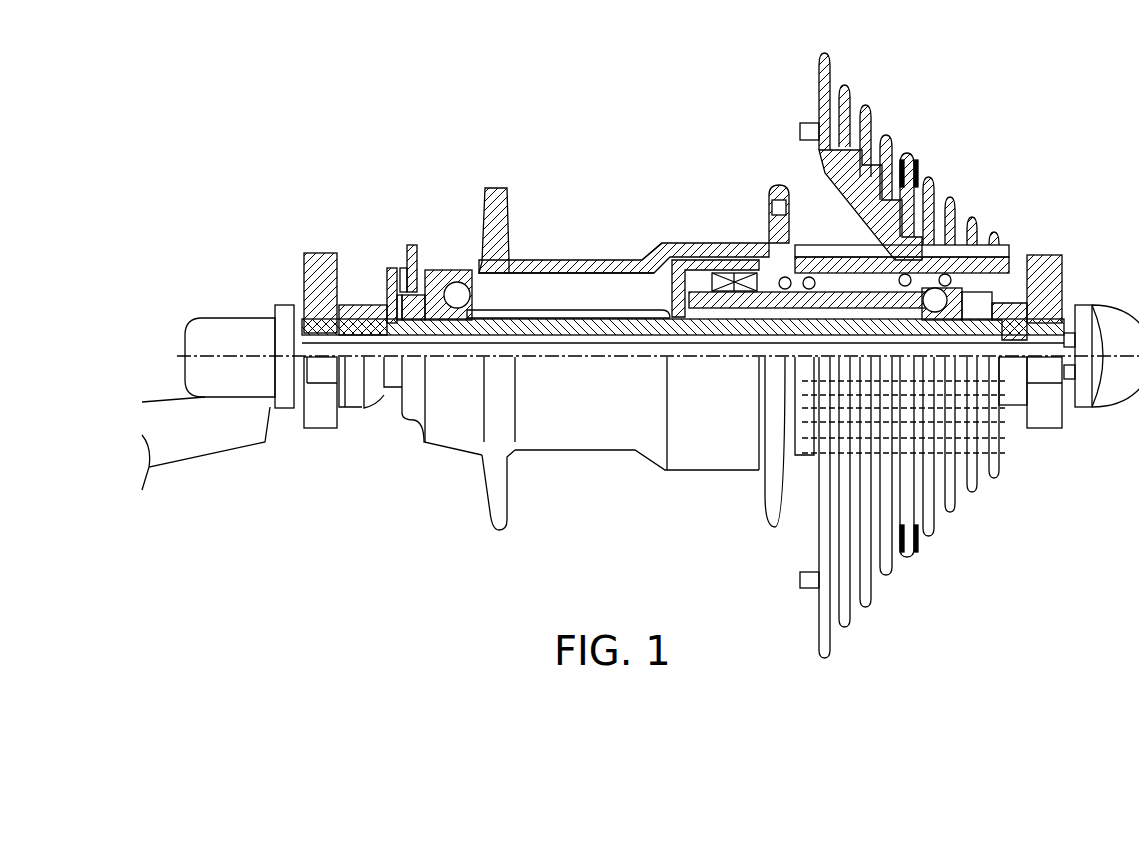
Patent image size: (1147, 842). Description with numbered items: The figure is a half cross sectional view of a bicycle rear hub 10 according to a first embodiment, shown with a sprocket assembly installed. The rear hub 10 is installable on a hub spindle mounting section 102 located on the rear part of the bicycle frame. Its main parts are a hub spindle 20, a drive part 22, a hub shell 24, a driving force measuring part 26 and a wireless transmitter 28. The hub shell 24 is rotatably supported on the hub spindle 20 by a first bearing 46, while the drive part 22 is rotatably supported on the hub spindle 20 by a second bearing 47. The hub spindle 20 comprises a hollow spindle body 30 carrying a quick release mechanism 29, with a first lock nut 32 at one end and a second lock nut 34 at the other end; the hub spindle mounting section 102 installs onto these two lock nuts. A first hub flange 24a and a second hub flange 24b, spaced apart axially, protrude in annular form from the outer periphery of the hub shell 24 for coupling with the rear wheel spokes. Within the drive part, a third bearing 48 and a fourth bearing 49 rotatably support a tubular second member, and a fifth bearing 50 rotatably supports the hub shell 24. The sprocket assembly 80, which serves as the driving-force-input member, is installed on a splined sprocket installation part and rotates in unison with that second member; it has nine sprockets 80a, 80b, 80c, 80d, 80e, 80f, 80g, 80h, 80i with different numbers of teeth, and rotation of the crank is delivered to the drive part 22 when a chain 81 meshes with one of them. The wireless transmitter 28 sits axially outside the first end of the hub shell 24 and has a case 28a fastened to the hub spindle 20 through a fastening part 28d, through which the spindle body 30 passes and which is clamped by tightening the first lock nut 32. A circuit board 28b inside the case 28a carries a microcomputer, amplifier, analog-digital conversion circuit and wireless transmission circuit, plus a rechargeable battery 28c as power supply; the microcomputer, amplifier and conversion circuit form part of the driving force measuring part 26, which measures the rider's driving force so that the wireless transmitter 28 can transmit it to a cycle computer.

The bicycle rear hub 10 is at (590, 186).
The hub spindle 20 is at (589, 310).
The drive part 22 is at (850, 256).
The hub shell 24 is at (641, 246).
The first hub flange 24a is at (495, 188).
The second hub flange 24b is at (775, 185).
The driving force measuring part 26 is at (709, 236).
The wireless transmitter 28 is at (413, 252).
The case 28a is at (411, 245).
The circuit board 28b is at (402, 262).
The rechargeable battery 28c is at (398, 272).
The fastening part 28d is at (392, 270).
The quick release mechanism 29 is at (237, 330).
The spindle body 30 is at (613, 311).
The first lock nut 32 is at (356, 393).
The second lock nut 34 is at (1010, 300).
The first bearing 46 is at (455, 282).
The second bearing 47 is at (957, 290).
The third bearing 48 is at (785, 276).
The fourth bearing 49 is at (928, 272).
The fifth bearing 50 is at (753, 265).
The sprocket assembly 80 is at (937, 163).
The sprocket 80a is at (997, 476).
The sprocket 80b is at (975, 490).
The sprocket 80c is at (953, 510).
The sprocket 80d is at (932, 535).
The sprocket 80e is at (912, 555).
The sprocket 80f is at (890, 573).
The sprocket 80g is at (869, 605).
The sprocket 80h is at (848, 625).
The sprocket 80i is at (828, 656).
The chain 81 is at (905, 160).
The hub spindle mounting section 102 is at (318, 258).